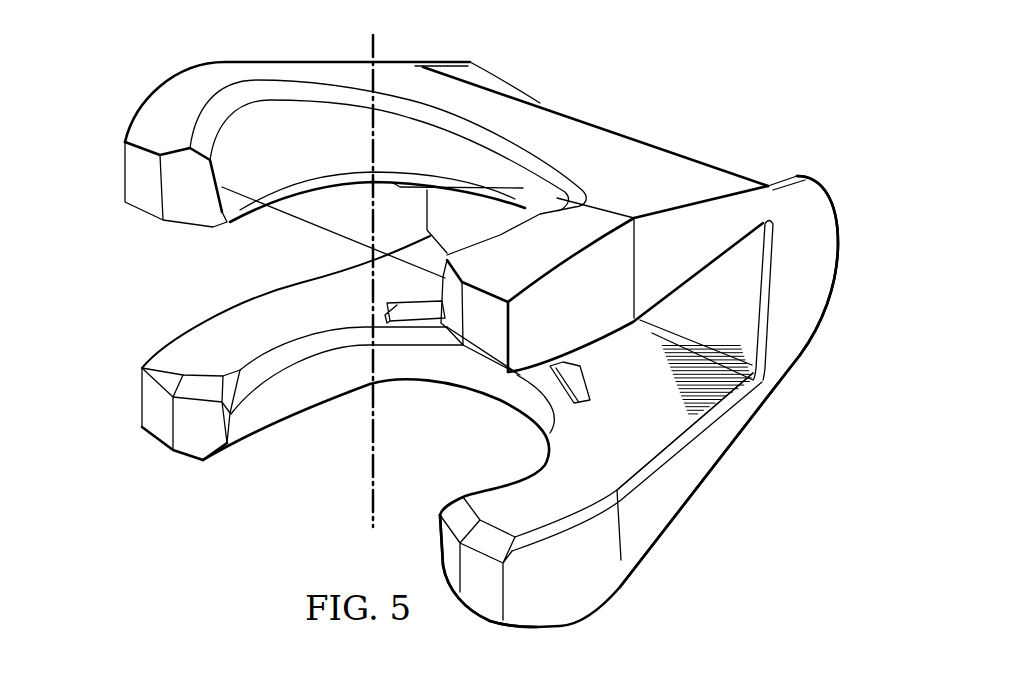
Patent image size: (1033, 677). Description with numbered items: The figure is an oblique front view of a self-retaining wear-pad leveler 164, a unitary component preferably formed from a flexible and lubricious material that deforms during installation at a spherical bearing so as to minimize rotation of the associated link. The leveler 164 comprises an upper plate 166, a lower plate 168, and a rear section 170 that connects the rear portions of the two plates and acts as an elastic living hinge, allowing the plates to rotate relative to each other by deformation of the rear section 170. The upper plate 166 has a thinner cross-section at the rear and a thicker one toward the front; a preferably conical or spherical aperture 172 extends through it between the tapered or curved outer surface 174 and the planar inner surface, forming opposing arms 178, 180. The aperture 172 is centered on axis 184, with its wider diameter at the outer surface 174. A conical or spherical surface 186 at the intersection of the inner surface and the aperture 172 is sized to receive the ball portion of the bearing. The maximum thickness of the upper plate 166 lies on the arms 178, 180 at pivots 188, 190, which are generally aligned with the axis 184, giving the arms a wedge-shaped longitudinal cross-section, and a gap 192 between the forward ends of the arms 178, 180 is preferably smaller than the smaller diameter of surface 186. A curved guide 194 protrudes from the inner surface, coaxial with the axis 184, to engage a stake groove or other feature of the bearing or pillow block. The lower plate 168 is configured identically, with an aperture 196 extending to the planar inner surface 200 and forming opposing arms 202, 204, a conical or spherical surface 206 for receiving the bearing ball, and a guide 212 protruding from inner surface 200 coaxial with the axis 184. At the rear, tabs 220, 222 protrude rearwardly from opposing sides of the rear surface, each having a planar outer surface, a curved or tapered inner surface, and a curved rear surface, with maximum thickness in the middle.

The self-retaining wear-pad leveler 164 is at (805, 65).
The upper plate 166 is at (659, 287).
The lower plate 168 is at (697, 469).
The rear section 170 is at (746, 272).
The aperture 172 is at (275, 125).
The outer surface 174 is at (627, 150).
The arm 178 is at (143, 105).
The arm 180 is at (490, 340).
The axis 184 is at (370, 522).
The surface 186 is at (247, 212).
The pivot 188 is at (195, 87).
The pivot 190 is at (563, 242).
The gap 192 is at (318, 228).
The curved guide 194 is at (492, 200).
The aperture 196 is at (250, 422).
The inner surface 200 is at (610, 467).
The arm 202 is at (148, 414).
The arm 204 is at (583, 603).
The surface 206 is at (293, 350).
The guide 212 is at (590, 392).
The tab 220 is at (527, 93).
The tab 222 is at (837, 240).